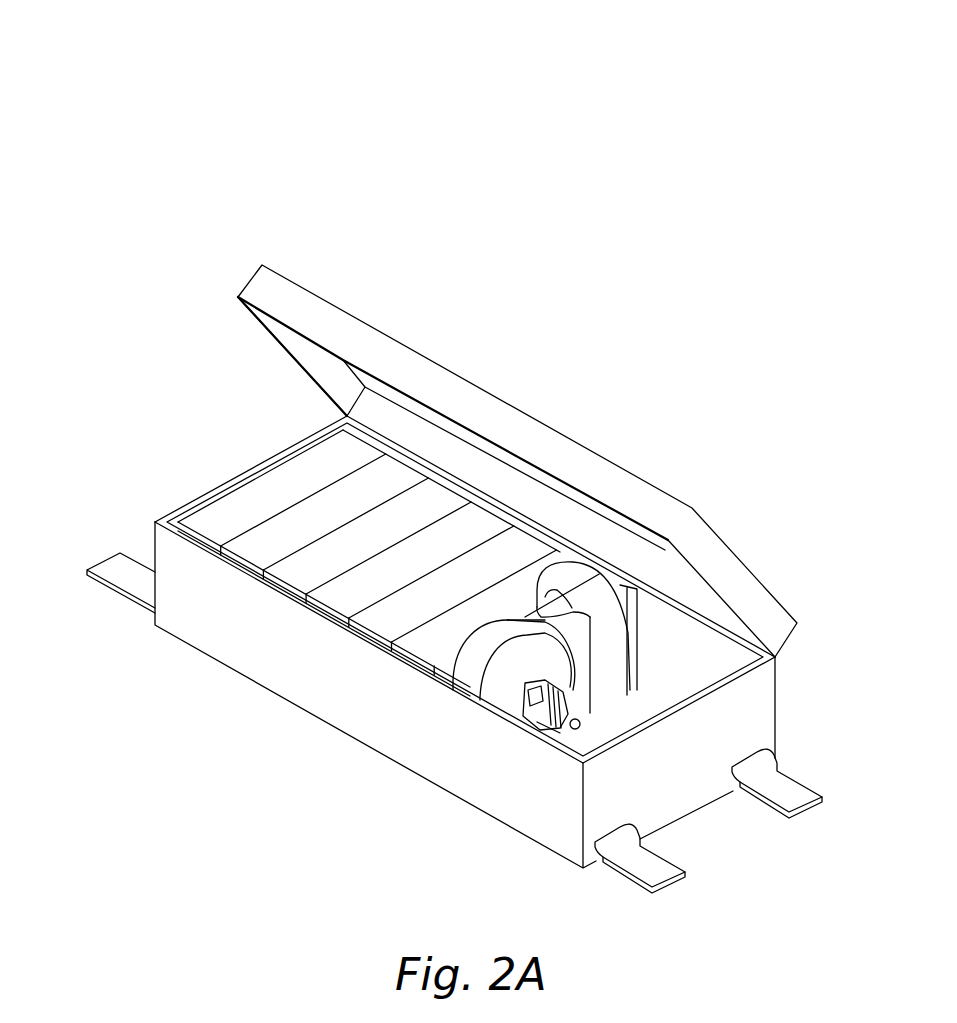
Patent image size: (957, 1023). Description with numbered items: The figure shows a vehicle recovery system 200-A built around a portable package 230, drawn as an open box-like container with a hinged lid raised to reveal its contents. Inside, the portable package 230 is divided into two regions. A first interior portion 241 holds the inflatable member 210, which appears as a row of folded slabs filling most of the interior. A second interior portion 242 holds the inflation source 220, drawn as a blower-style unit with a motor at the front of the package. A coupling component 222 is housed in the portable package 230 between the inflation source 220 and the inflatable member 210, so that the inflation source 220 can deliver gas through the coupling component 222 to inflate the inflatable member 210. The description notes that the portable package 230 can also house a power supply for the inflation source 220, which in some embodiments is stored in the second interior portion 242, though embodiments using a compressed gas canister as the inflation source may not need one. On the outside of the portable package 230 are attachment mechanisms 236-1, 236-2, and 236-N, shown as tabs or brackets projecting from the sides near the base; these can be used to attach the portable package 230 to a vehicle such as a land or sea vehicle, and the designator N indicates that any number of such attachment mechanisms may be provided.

The vehicle recovery system 200-A is at (240, 104).
The inflatable member 210 is at (239, 507).
The inflation source 220 is at (500, 683).
The coupling component 222 is at (613, 643).
The portable package 230 is at (602, 386).
The attachment mechanism 236-1 is at (665, 862).
The attachment mechanism 236-2 is at (795, 786).
The attachment mechanism 236-N is at (107, 563).
The first interior portion 241 is at (318, 634).
The second interior portion 242 is at (428, 683).